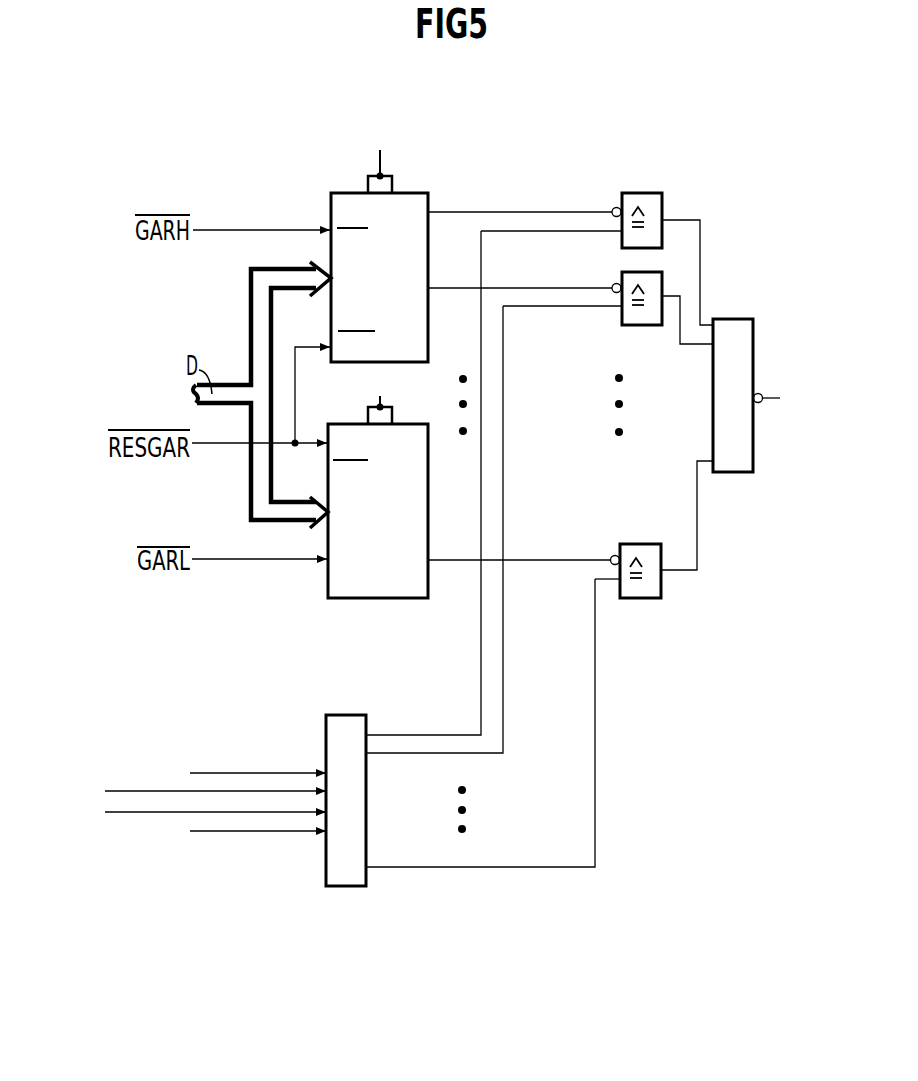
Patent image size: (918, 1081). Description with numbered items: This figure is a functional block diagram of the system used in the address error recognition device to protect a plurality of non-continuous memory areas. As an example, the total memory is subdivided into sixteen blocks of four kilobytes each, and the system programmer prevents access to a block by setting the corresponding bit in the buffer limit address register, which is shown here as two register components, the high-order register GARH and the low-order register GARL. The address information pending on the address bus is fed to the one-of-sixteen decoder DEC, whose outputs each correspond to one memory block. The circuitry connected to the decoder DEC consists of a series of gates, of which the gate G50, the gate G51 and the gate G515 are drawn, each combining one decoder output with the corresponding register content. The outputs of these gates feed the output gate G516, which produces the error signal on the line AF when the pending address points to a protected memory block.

The gate G50 is at (643, 195).
The gate G51 is at (643, 281).
The gate G515 is at (643, 553).
The gate G516 is at (745, 333).
The 1-of-16 decoder DEC is at (345, 876).
The buffer limit address register GARH is at (379, 241).
The buffer limit address register GARL is at (378, 482).